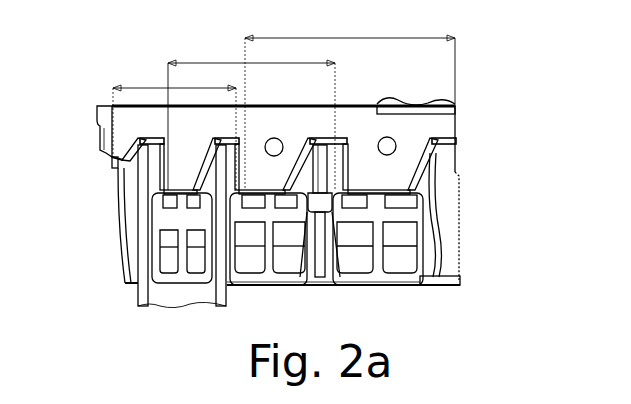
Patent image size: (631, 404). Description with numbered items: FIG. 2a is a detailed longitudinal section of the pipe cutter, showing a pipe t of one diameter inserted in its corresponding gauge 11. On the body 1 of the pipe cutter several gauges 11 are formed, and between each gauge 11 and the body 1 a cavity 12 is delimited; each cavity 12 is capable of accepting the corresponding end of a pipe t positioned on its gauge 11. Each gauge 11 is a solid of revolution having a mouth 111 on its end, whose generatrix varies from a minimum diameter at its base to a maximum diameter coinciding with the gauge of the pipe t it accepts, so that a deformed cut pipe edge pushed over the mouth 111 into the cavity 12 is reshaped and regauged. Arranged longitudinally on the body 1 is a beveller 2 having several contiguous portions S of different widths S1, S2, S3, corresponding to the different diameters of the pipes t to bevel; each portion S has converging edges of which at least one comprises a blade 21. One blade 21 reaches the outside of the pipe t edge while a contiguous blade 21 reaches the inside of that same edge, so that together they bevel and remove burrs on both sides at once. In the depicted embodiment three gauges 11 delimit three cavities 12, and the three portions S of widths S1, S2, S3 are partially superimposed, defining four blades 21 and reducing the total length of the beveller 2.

The body 1 is at (98, 108).
The beveller 2 is at (456, 128).
The gauge 11 is at (185, 274).
The cavity 12 is at (378, 222).
The blade 21 is at (137, 156).
The mouth 111 is at (154, 268).
The portion S is at (150, 162).
The pipe t is at (135, 300).
The width of first portion S1 is at (174, 126).
The width of second portion S2 is at (251, 114).
The width of third portion S3 is at (350, 102).